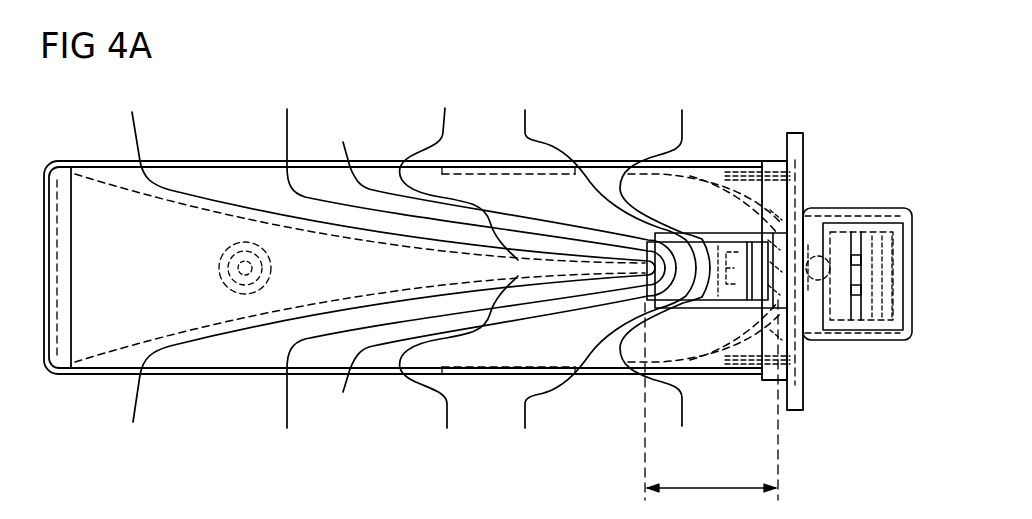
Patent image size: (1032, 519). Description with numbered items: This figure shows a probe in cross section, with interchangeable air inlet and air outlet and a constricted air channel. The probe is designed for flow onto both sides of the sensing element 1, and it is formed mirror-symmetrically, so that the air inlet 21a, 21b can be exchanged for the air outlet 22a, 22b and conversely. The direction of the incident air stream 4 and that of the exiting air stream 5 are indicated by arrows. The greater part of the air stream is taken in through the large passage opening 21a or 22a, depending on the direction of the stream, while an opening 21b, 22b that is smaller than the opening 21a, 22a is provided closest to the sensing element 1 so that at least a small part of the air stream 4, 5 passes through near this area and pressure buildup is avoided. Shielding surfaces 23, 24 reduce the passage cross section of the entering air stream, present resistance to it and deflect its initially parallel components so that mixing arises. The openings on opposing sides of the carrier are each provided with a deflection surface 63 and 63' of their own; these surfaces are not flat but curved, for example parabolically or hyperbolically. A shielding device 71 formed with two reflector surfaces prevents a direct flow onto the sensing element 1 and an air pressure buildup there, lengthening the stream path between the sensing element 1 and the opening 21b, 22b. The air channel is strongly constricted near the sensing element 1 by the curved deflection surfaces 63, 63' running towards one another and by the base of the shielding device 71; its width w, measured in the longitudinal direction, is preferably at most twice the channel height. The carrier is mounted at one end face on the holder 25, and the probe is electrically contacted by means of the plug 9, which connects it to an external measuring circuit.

The sensing element 1 is at (707, 309).
The incident air stream 4 is at (132, 130).
The exiting air stream 5 is at (133, 405).
The plug 9 is at (845, 208).
The air inlet 21a is at (239, 146).
The air inlet 21b is at (607, 146).
The air outlet 22a is at (239, 390).
The air outlet 22b is at (607, 392).
The shielding surface 23 is at (498, 167).
The shielding surface 24 is at (500, 372).
The holder 25 is at (803, 362).
The deflection surface 63 is at (503, 190).
The deflection surface 63' is at (503, 346).
The shielding device 71 is at (711, 182).
The width of the air channel w is at (738, 487).